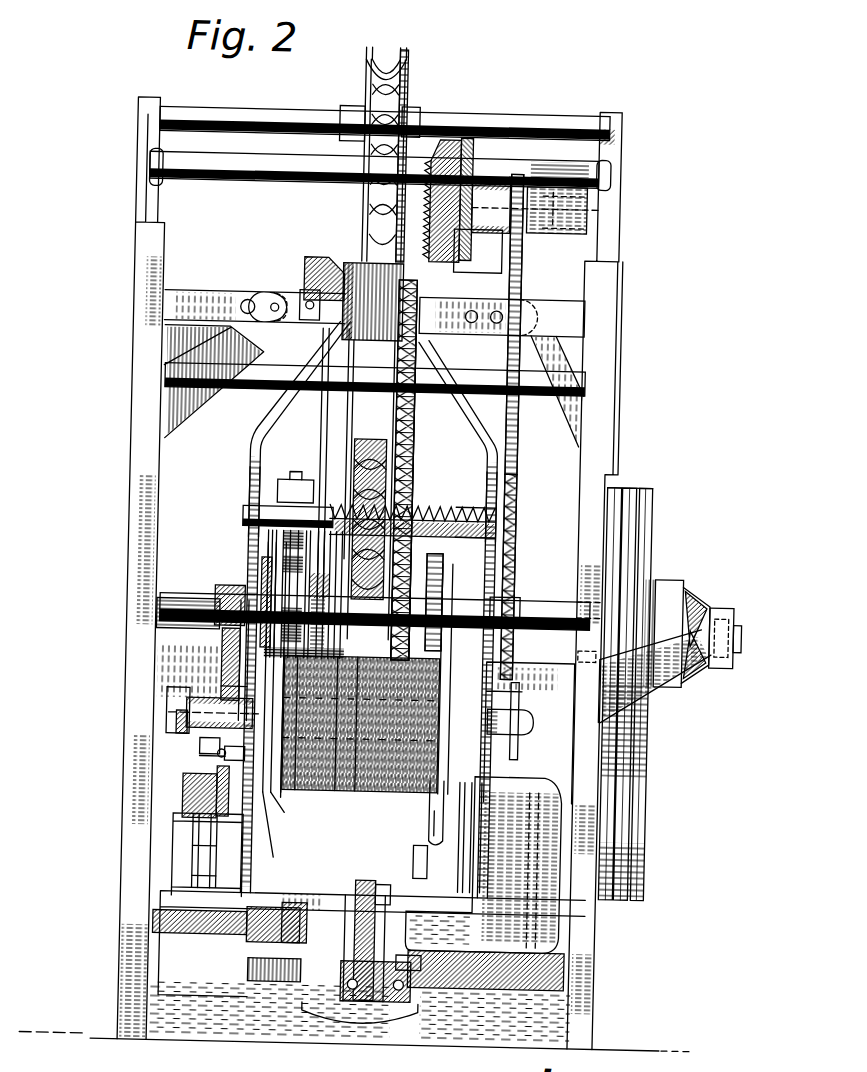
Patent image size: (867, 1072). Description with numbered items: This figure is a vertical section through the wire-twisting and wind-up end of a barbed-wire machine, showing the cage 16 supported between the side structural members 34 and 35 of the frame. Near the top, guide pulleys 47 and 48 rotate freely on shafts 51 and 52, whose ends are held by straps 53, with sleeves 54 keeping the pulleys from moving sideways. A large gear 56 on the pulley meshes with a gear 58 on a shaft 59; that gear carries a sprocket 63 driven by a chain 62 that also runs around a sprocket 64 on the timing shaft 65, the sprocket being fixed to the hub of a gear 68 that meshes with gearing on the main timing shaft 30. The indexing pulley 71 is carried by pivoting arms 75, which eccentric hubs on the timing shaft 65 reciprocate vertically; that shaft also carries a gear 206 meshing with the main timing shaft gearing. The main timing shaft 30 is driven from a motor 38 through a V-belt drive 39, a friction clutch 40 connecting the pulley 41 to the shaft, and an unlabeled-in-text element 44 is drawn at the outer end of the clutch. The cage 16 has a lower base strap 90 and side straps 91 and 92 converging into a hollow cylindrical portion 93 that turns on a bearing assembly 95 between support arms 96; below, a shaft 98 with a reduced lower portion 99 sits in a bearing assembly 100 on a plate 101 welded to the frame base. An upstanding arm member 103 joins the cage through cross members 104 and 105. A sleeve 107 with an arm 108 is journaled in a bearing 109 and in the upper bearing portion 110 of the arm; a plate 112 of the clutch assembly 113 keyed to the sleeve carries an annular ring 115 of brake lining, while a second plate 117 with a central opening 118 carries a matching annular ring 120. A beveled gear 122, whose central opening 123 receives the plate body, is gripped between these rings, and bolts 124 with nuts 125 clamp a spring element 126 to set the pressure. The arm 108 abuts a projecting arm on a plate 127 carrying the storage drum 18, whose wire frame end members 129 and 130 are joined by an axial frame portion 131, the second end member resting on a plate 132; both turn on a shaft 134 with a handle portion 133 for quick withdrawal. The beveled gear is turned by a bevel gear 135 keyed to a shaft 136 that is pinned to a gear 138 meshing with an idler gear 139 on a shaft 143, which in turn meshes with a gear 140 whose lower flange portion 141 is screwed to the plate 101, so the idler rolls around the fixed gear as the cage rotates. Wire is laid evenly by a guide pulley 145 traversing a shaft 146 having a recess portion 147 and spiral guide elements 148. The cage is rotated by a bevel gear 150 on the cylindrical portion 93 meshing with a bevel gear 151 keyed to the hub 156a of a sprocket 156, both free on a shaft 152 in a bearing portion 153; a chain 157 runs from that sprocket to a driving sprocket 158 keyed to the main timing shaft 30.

The cage 16 is at (257, 415).
The storage drum 18 is at (381, 797).
The main timing shaft 30 is at (557, 650).
The side structural member 34 is at (130, 250).
The side structural member 35 is at (604, 256).
The motor 38 is at (578, 925).
The V-belt drive 39 is at (652, 788).
The friction clutch 40 is at (666, 580).
The pulley 41 is at (652, 515).
The hub 44 is at (738, 630).
The guide pulley 47 is at (358, 78).
The guide pulley 48 is at (370, 48).
The shaft 51 is at (272, 162).
The shaft 52 is at (462, 112).
The strap 53 is at (160, 156).
The sleeve 54 is at (336, 108).
The large gear 56 is at (399, 62).
The gear 58 is at (412, 410).
The shaft 59 is at (470, 370).
The chain 62 is at (412, 494).
The sprocket 63 is at (412, 436).
The sprocket 64 is at (412, 598).
The timing shaft 65 is at (545, 596).
The gear 68 is at (444, 560).
The indexing pulley 71 is at (344, 410).
The pivoting arm 75 is at (318, 440).
The lower base strap 90 is at (358, 896).
The side strap 91 is at (248, 460).
The side strap 92 is at (485, 462).
The hollow cylindrical portion 93 is at (372, 296).
The bearing assembly 95 is at (294, 300).
The support arm 96 is at (195, 294).
The shaft 98 is at (375, 882).
The lower portion 99 is at (340, 1008).
The bearing assembly 100 is at (392, 998).
The plate 101 is at (257, 970).
The upstanding arm member 103 is at (179, 828).
The cross member 104 is at (199, 855).
The cross member 105 is at (179, 896).
The sleeve 107 is at (196, 716).
The arm 108 is at (222, 592).
The bearing 109 is at (320, 770).
The upper bearing portion 110 is at (170, 700).
The plate 112 is at (180, 734).
The clutch assembly 113 is at (188, 788).
The annular ring 115 is at (288, 798).
The second plate 117 is at (224, 660).
The central opening 118 is at (224, 692).
The annular ring 120 is at (158, 620).
The beveled gear 122 is at (272, 820).
The central opening 123 is at (352, 785).
The bolt 124 is at (207, 767).
The nut 125 is at (229, 757).
The spring element 126 is at (262, 595).
The plate 127 is at (268, 555).
The wire frame end member 129 is at (292, 818).
The wire frame end member 130 is at (436, 815).
The axial frame portion 131 is at (365, 770).
The plate 132 is at (440, 835).
The handle portion 133 is at (522, 738).
The shaft 134 is at (440, 785).
The bevel gear 135 is at (222, 790).
The shaft 136 is at (199, 880).
The gear 138 is at (168, 938).
The idler gear 139 is at (258, 940).
The gear 140 is at (395, 880).
The lower flange portion 141 is at (425, 968).
The shaft 143 is at (322, 905).
The guide pulley 145 is at (352, 490).
The shaft 146 is at (276, 494).
The recess portion 147 is at (470, 508).
The guide element 148 is at (470, 528).
The bevel gear 150 is at (300, 264).
The bevel gear 151 is at (456, 150).
The shaft 152 is at (545, 175).
The bearing portion 153 is at (574, 204).
The sprocket 156 is at (530, 207).
The hub 156a is at (478, 244).
The chain 157 is at (520, 270).
The driving sprocket 158 is at (516, 560).
The gear 206 is at (237, 516).